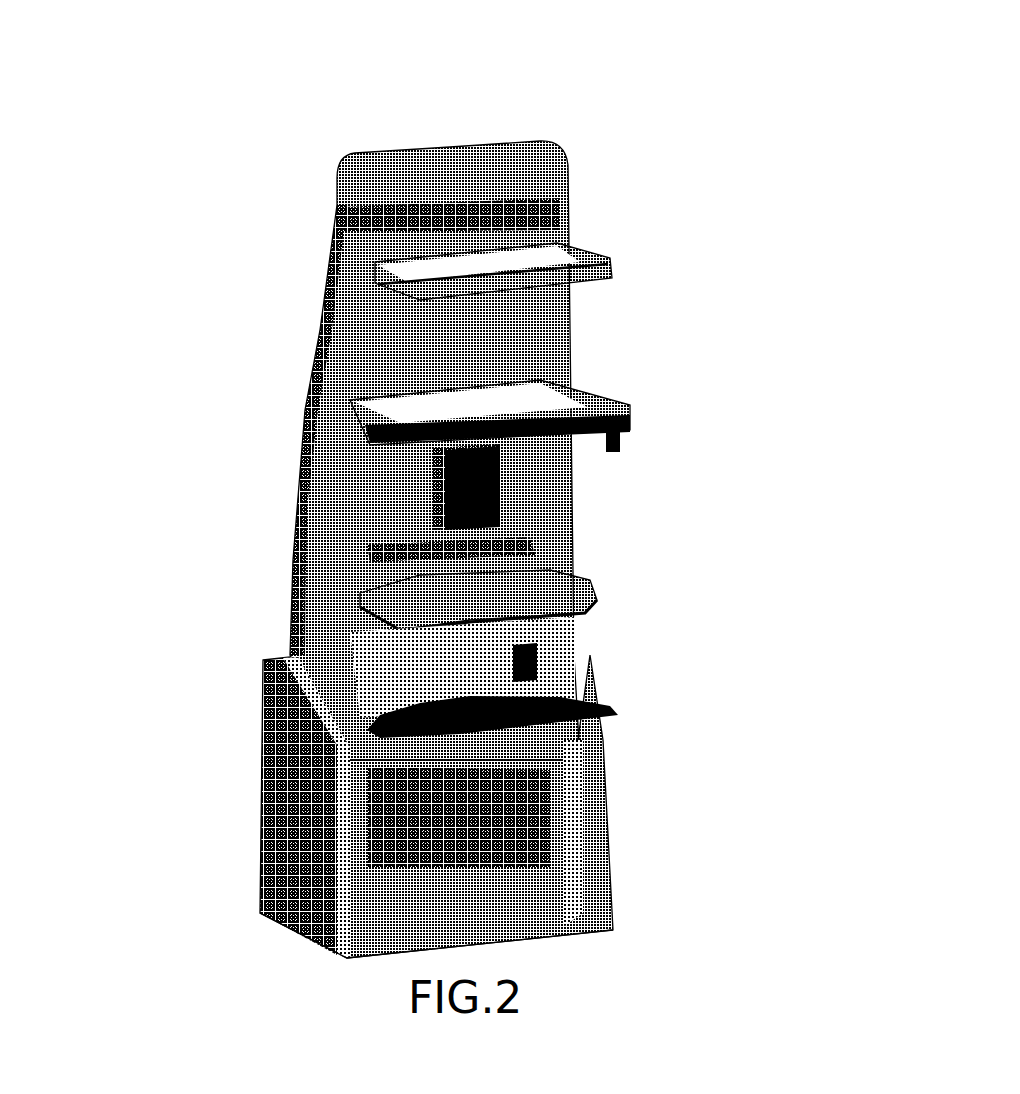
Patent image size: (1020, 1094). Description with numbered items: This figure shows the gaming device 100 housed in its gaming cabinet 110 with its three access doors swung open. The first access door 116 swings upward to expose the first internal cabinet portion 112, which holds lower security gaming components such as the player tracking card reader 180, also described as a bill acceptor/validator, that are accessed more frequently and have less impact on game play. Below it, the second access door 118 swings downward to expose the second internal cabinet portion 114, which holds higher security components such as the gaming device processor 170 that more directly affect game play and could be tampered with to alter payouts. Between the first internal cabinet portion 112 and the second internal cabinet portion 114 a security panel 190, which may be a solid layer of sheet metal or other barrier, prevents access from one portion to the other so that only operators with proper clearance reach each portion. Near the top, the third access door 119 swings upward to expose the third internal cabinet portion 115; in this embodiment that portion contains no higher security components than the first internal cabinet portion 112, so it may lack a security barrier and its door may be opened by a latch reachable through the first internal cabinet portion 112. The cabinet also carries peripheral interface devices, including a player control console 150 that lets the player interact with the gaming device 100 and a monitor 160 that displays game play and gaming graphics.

The gaming device 100 is at (451, 479).
The gaming cabinet 110 is at (565, 190).
The first internal cabinet portion 112 is at (515, 492).
The second internal cabinet portion 114 is at (575, 653).
The third internal cabinet portion 115 is at (500, 340).
The first access door 116 is at (630, 420).
The second access door 118 is at (615, 710).
The third access door 119 is at (613, 263).
The player control console 150 is at (597, 603).
The monitor 160 is at (308, 443).
The gaming device processor 170 is at (262, 708).
The player tracking card reader 180 is at (377, 558).
The security panel 190 is at (395, 535).